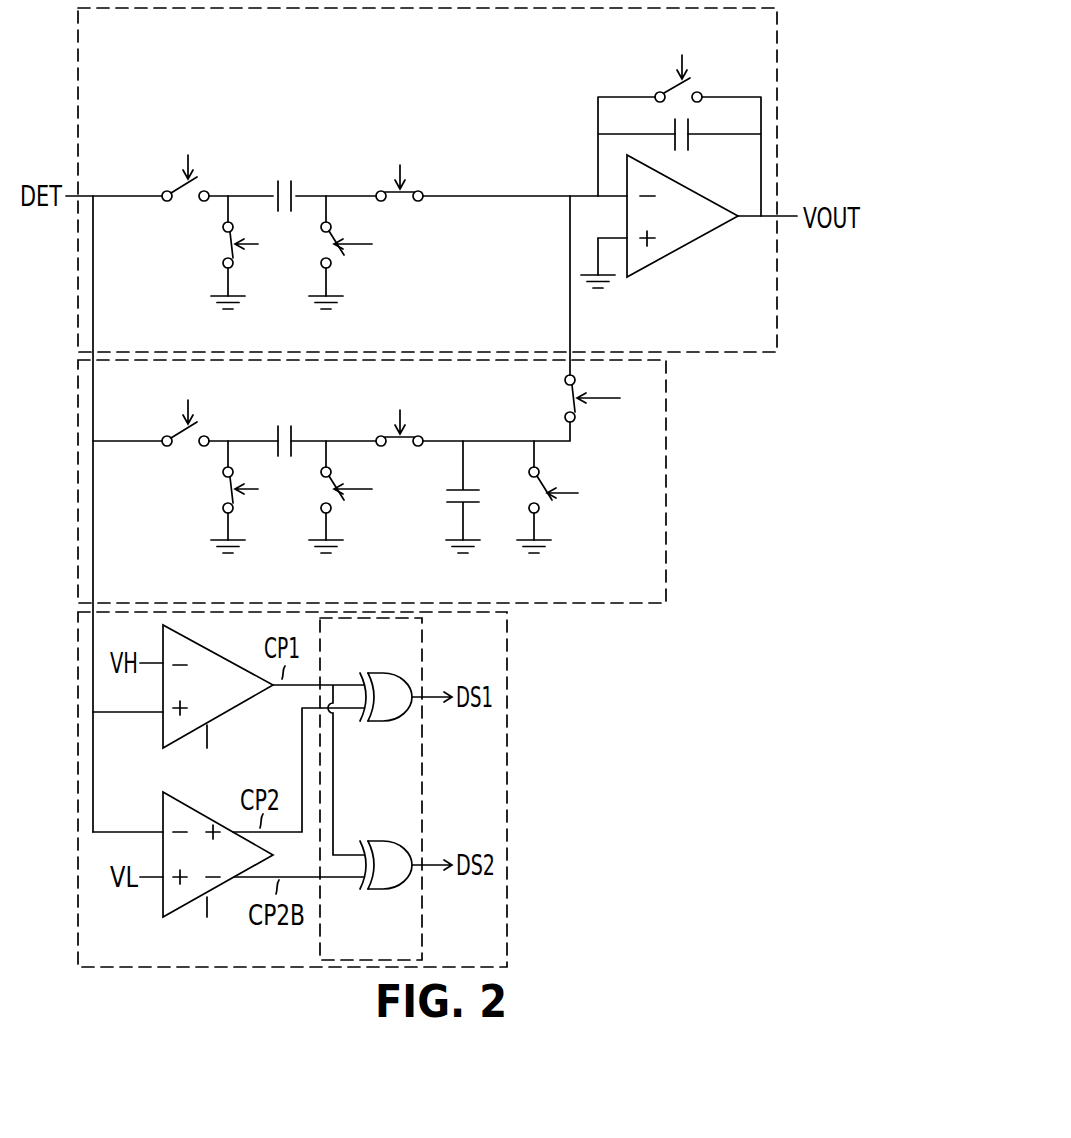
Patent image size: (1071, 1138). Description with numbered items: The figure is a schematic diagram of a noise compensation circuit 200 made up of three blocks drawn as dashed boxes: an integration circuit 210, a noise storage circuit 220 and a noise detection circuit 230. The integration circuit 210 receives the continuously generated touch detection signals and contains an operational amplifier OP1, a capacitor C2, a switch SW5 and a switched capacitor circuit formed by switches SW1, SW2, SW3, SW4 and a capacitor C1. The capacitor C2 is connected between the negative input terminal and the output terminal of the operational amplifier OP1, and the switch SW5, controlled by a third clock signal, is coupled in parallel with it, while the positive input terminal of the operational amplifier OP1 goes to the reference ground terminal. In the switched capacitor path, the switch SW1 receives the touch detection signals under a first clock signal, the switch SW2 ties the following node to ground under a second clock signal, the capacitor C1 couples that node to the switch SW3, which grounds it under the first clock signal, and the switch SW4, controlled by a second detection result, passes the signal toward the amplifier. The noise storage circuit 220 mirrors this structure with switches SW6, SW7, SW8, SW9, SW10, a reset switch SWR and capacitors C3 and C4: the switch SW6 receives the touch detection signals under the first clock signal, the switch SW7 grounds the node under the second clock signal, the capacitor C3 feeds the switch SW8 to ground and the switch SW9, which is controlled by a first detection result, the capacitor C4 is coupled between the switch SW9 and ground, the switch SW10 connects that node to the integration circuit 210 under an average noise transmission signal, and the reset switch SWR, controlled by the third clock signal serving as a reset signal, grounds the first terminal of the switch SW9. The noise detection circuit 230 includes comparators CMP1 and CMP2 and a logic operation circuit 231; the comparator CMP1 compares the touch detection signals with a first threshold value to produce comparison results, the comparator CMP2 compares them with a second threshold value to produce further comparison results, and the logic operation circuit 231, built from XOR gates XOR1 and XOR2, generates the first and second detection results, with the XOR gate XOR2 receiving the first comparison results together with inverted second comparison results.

The noise compensation circuit 200 is at (690, 963).
The integration circuit 210 is at (781, 296).
The noise storage circuit 220 is at (669, 543).
The noise detection circuit 230 is at (509, 818).
The logic operation circuit 231 is at (424, 810).
The switch SW1 is at (172, 184).
The switch SW2 is at (238, 256).
The switch SW3 is at (357, 258).
The switch SW4 is at (385, 184).
The switch SW5 is at (668, 85).
The switch SW6 is at (170, 428).
The switch SW7 is at (238, 501).
The switch SW8 is at (357, 503).
The switch SW9 is at (385, 429).
The switch SW10 is at (587, 410).
The reset switch SWR is at (562, 505).
The capacitor C1 is at (285, 179).
The capacitor C2 is at (699, 148).
The capacitor C3 is at (285, 424).
The capacitor C4 is at (478, 517).
The operational amplifier OP1 is at (695, 243).
The comparator CMP1 is at (161, 727).
The comparator CMP2 is at (161, 897).
The XOR gate XOR1 is at (386, 723).
The XOR gate XOR2 is at (386, 891).